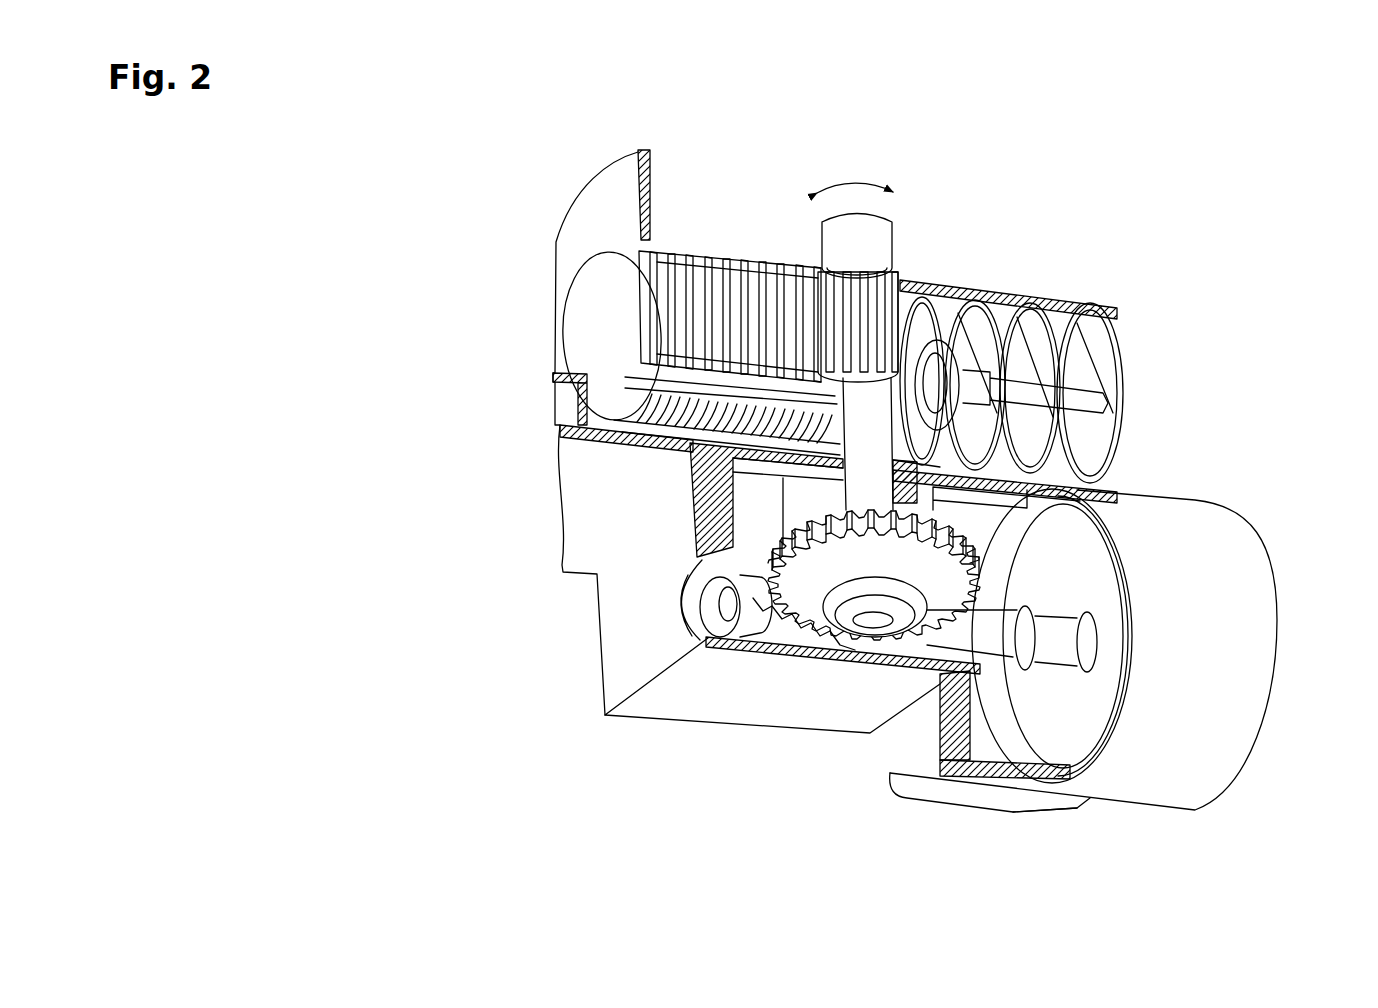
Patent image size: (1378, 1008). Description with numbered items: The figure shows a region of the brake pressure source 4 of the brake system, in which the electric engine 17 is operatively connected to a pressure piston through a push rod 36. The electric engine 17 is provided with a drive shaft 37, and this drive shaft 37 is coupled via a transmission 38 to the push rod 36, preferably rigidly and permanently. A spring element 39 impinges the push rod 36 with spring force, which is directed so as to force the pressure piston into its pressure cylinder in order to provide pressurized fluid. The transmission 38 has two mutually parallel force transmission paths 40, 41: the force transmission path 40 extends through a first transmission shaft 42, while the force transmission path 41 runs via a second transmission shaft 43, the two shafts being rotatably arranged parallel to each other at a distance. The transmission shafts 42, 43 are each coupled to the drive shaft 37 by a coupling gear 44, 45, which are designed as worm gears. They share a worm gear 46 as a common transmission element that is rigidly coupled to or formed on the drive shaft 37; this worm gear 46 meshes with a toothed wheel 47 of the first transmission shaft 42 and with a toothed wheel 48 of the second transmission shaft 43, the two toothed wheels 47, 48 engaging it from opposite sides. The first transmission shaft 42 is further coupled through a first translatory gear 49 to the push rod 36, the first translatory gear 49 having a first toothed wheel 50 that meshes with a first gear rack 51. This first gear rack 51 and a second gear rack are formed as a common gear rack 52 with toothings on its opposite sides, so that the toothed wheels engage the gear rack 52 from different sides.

The brake pressure source 4 is at (1117, 220).
The electric engine 17 is at (1278, 572).
The push rod 36 is at (590, 312).
The drive shaft 37 is at (992, 633).
The transmission 38 is at (957, 247).
The spring element 39 is at (1123, 372).
The force transmission path 40 is at (730, 263).
The force transmission path 41 is at (712, 535).
The first transmission shaft 42 is at (925, 318).
The second transmission shaft 43 is at (760, 510).
The coupling gear 44 is at (793, 605).
The coupling gear 45 is at (822, 655).
The worm gear 46 is at (740, 637).
The toothed wheel 47 is at (927, 612).
The toothed wheel 48 is at (843, 643).
The first translatory gear 49 is at (913, 253).
The first toothed wheel 50 is at (813, 273).
The first gear rack 51 is at (720, 277).
The gear rack 52 is at (672, 237).